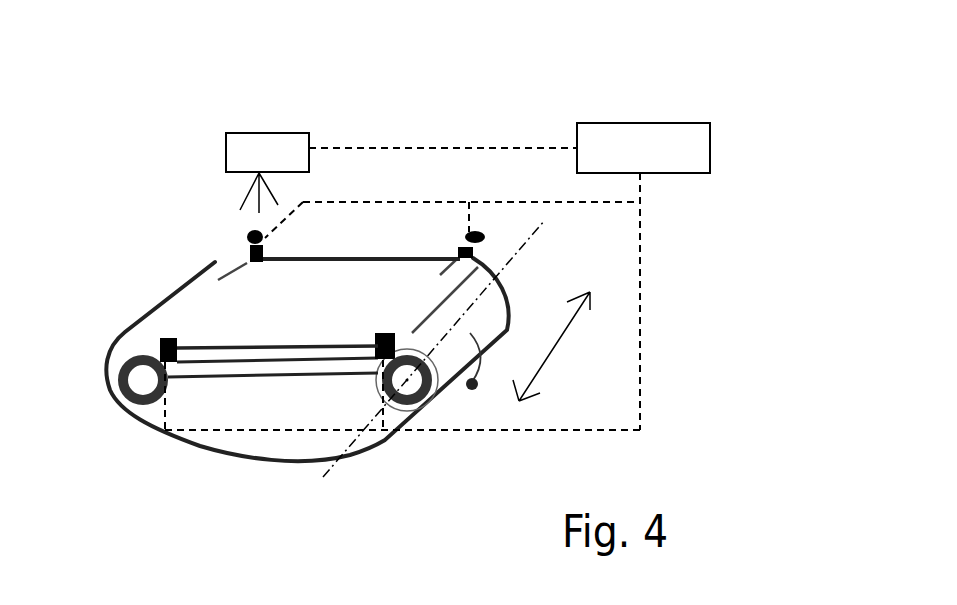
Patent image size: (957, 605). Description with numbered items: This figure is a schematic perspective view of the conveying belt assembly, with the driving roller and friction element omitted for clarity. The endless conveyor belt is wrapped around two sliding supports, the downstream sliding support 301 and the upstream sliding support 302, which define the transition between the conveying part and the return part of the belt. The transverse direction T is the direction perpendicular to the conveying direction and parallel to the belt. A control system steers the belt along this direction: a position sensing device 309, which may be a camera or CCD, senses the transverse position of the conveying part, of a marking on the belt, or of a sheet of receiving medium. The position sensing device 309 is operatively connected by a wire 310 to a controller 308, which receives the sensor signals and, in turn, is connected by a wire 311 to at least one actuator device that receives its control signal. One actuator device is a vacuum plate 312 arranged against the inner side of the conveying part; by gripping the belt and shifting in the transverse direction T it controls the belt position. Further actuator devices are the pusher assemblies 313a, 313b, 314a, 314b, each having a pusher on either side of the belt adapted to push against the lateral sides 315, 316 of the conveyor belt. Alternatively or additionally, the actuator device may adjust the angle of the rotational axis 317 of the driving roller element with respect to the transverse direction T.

The downstream sliding support 301 is at (424, 358).
The upstream sliding support 302 is at (115, 372).
The controller 308 is at (620, 140).
The position sensing device 309 is at (257, 148).
The wire 310 is at (475, 147).
The wire 311 is at (640, 375).
The vacuum plate 312 is at (238, 375).
The pusher assembly 313a is at (252, 243).
The pusher assembly 313b is at (161, 343).
The pusher assembly 314a is at (459, 245).
The pusher assembly 314b is at (375, 358).
The lateral side of the conveyor belt 315 is at (223, 353).
The lateral side of the conveyor belt 316 is at (343, 253).
The rotational axis of the driving roller element 317 is at (530, 233).
The transverse direction T is at (555, 350).